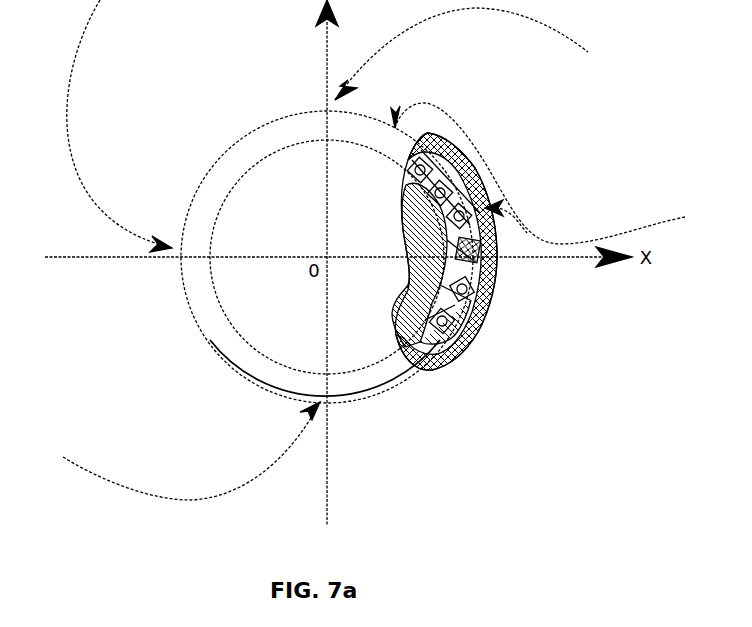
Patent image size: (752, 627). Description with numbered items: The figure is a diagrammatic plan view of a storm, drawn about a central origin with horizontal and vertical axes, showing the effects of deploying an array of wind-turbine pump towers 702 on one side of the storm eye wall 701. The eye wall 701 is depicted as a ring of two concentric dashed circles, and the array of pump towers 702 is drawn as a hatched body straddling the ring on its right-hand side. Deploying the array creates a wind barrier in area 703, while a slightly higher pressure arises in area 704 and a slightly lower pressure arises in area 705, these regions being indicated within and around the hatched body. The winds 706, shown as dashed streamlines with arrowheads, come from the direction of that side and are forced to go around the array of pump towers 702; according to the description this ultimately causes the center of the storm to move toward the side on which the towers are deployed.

The storm eye wall 701 is at (178, 307).
The array of wind-turbine pump towers 702 is at (478, 258).
The wind barrier area 703 is at (476, 278).
The slightly higher pressure area 704 is at (478, 330).
The slightly lower pressure area 705 is at (418, 333).
The winds 706 is at (508, 151).